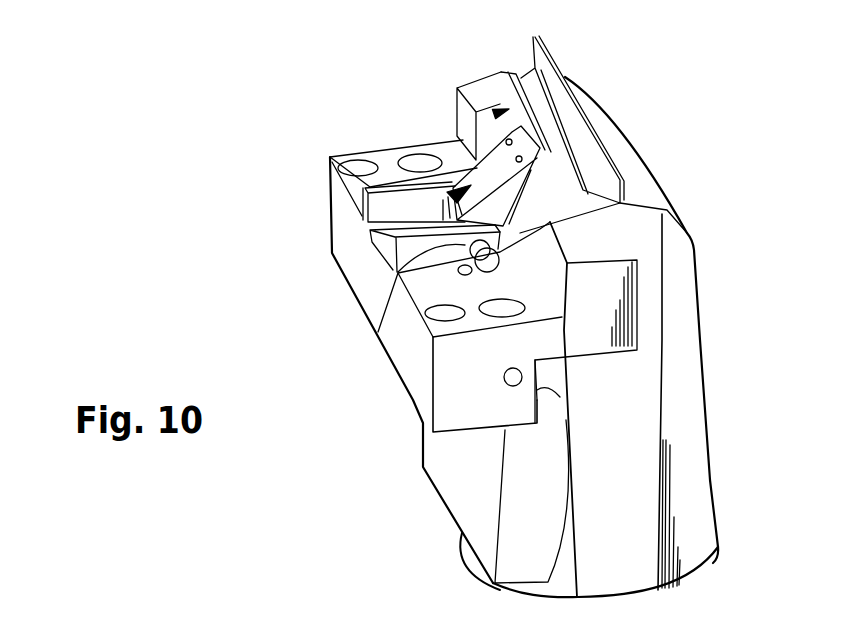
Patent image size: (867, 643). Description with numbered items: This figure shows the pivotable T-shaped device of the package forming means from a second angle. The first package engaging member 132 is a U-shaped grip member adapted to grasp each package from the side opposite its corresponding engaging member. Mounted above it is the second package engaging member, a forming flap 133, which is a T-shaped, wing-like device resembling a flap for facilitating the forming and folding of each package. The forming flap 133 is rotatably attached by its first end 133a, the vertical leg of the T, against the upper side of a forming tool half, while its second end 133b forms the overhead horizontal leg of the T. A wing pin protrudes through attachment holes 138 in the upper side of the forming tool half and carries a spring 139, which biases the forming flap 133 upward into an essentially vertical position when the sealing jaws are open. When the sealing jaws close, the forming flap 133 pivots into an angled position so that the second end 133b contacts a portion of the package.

The first package engaging member 132 is at (613, 293).
The forming flap 133 is at (492, 167).
The first end 133a is at (392, 142).
The second end 133b is at (496, 114).
The attachment holes 138 is at (378, 332).
The spring 139 is at (365, 218).